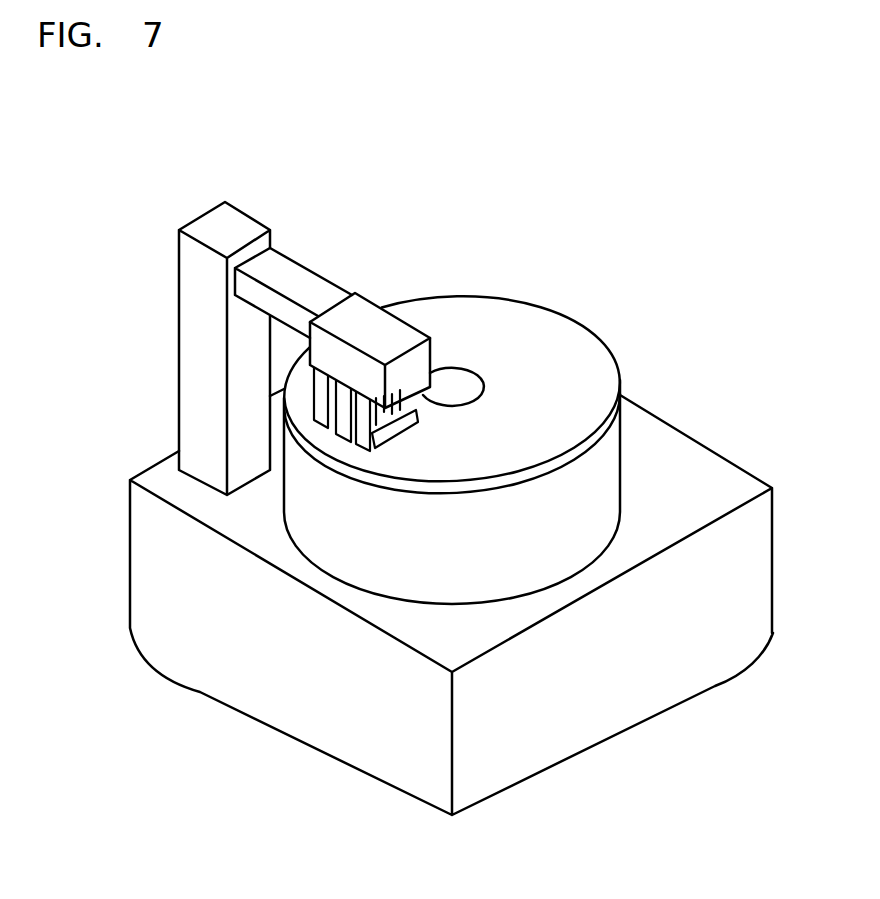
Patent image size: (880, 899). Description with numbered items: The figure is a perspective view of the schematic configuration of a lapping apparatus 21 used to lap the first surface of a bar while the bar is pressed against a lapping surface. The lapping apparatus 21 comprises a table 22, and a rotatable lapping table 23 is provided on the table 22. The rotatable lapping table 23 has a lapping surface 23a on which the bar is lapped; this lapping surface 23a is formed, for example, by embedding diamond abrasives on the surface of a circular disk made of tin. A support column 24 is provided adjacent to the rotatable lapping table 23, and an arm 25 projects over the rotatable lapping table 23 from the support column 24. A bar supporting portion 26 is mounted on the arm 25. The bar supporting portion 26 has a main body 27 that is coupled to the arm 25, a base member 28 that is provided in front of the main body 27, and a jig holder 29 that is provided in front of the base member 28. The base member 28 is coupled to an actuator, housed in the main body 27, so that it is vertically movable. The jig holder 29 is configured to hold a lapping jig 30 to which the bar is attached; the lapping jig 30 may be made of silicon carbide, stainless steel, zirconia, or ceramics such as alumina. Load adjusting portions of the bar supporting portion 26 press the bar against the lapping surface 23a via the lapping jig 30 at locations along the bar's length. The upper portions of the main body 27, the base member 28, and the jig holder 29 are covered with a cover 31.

The lapping apparatus 21 is at (484, 221).
The table 22 is at (690, 435).
The rotatable lapping table 23 is at (620, 433).
The lapping surface 23a is at (595, 362).
The support column 24 is at (204, 213).
The arm 25 is at (243, 287).
The bar supporting portion 26 is at (377, 292).
The main body 27 is at (330, 420).
The base member 28 is at (343, 438).
The jig holder 29 is at (355, 447).
The lapping jig 30 is at (382, 430).
The cover 31 is at (403, 318).